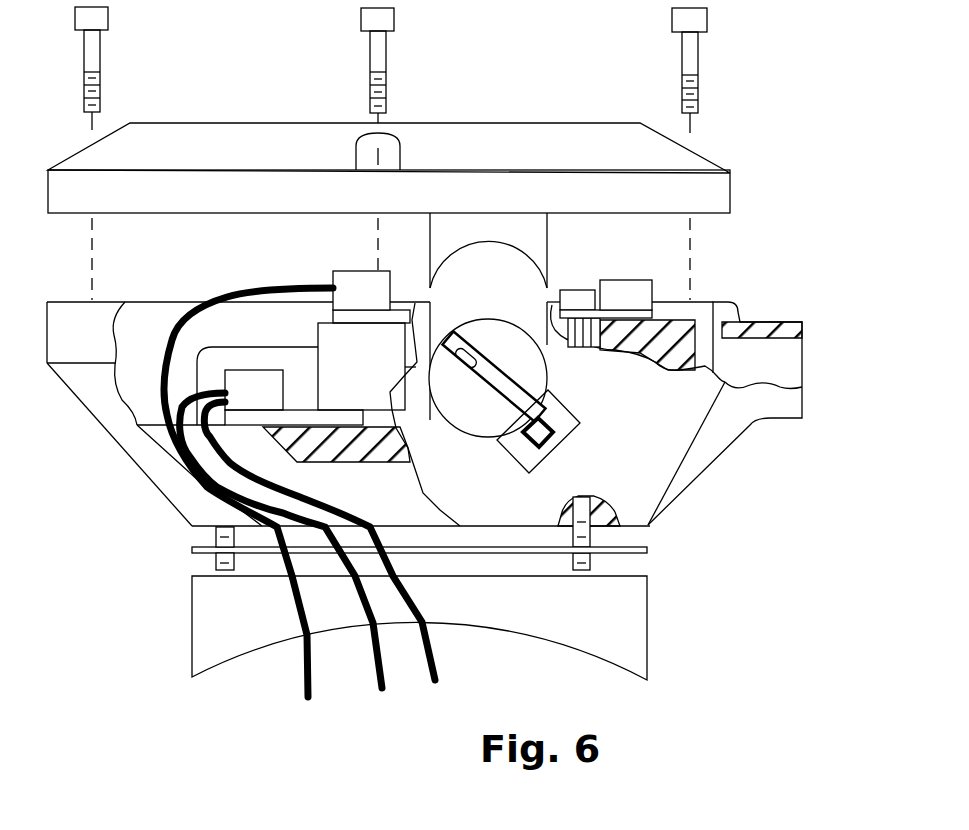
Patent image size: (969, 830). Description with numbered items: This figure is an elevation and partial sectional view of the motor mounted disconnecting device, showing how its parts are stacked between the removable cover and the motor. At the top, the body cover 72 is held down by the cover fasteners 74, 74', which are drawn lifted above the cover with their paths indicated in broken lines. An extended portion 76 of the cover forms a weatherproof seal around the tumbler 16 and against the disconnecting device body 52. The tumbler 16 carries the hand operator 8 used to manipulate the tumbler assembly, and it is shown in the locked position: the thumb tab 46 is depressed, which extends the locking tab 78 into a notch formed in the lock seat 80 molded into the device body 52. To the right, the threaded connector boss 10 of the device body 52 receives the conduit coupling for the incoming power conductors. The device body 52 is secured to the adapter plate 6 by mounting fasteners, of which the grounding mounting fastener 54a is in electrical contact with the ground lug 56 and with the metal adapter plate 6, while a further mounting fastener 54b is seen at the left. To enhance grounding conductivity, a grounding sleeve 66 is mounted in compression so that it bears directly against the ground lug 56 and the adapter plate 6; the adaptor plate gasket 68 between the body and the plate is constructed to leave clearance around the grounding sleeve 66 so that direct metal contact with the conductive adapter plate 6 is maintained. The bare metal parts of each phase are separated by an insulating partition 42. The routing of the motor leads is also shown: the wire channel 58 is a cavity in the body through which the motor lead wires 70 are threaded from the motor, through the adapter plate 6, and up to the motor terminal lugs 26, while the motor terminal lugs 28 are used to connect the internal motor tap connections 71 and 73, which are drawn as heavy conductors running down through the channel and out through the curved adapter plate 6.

The cover fastener 74 is at (104, 153).
The cover fastener 74' is at (549, 154).
The body cover 72 is at (732, 193).
The extended portion of the cover 76 is at (502, 243).
The motor terminal lug 26 is at (343, 272).
The grounding mounting fastener 54a is at (572, 289).
The ground lug 56 is at (618, 280).
The threaded connector boss 10 is at (787, 322).
The motor lead wire 70 is at (163, 352).
The insulating partition 42 is at (240, 345).
The thumb tab 46 is at (480, 348).
The motor terminal lug 28 is at (283, 374).
The hand operator 8 is at (483, 405).
The lock seat 80 is at (577, 428).
The disconnecting device body 52 is at (130, 462).
The tumbler 16 is at (477, 445).
The locking tab 78 is at (522, 444).
The wire channel 58 is at (408, 509).
The mounting fastener 54b is at (215, 537).
The grounding sleeve 66 is at (592, 533).
The adaptor plate gasket 68 is at (198, 553).
The adapter plate 6 is at (192, 622).
The internal motor tap connection 71 is at (373, 655).
The internal motor tap connection 73 is at (435, 652).